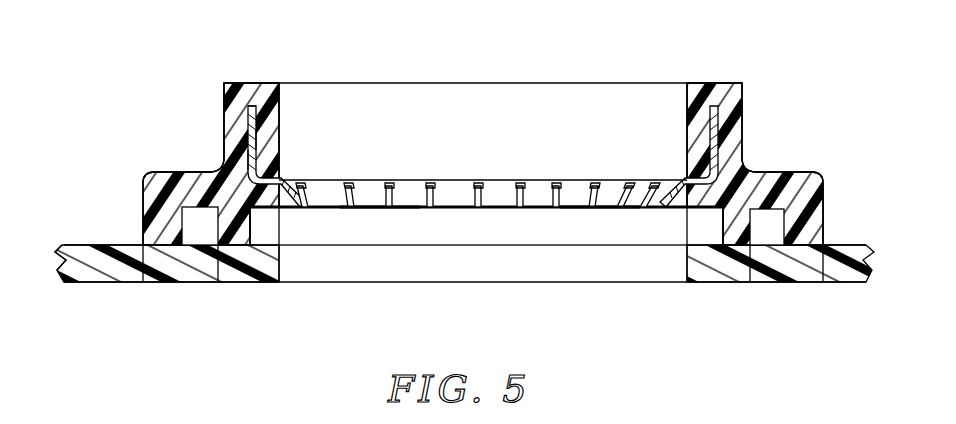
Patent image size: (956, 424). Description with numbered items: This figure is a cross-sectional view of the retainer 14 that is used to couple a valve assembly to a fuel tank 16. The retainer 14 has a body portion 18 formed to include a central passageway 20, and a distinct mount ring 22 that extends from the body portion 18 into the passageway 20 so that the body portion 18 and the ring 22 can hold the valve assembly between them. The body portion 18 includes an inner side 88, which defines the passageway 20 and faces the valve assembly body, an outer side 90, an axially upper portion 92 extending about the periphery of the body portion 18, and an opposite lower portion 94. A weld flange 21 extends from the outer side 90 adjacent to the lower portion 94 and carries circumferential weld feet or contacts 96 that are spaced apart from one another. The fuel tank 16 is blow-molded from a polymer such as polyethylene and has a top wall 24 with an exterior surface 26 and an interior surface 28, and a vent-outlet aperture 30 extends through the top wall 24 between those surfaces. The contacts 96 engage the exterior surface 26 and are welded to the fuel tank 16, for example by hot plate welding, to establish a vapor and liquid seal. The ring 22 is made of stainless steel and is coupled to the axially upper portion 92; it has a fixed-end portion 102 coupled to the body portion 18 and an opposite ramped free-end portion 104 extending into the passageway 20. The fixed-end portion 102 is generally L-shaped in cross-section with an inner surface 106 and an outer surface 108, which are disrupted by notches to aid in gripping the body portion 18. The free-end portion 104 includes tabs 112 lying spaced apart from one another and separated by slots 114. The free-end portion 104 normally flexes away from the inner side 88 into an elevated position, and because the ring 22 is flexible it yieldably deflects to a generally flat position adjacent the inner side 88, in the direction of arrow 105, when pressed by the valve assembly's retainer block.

The retainer 14 is at (768, 60).
The fuel tank 16 is at (88, 289).
The body portion 18 is at (220, 106).
The central passageway 20 is at (370, 118).
The weld flange 21 is at (200, 230).
The mount ring 22 is at (262, 150).
The top wall 24 is at (166, 287).
The exterior surface 26 is at (113, 245).
The interior surface 28 is at (207, 284).
The vent-outlet aperture 30 is at (320, 262).
The inner side 88 is at (492, 108).
The outer side 90 is at (223, 135).
The axially upper portion 92 is at (237, 83).
The lower portion 94 is at (252, 212).
The weld contacts 96 is at (145, 247).
The fixed-end portion 102 is at (248, 114).
The free-end portion 104 is at (294, 191).
The arrow 105 is at (270, 226).
The inner surface 106 is at (260, 141).
The outer surface 108 is at (248, 154).
The tabs 112 is at (462, 186).
The slots 114 is at (380, 214).